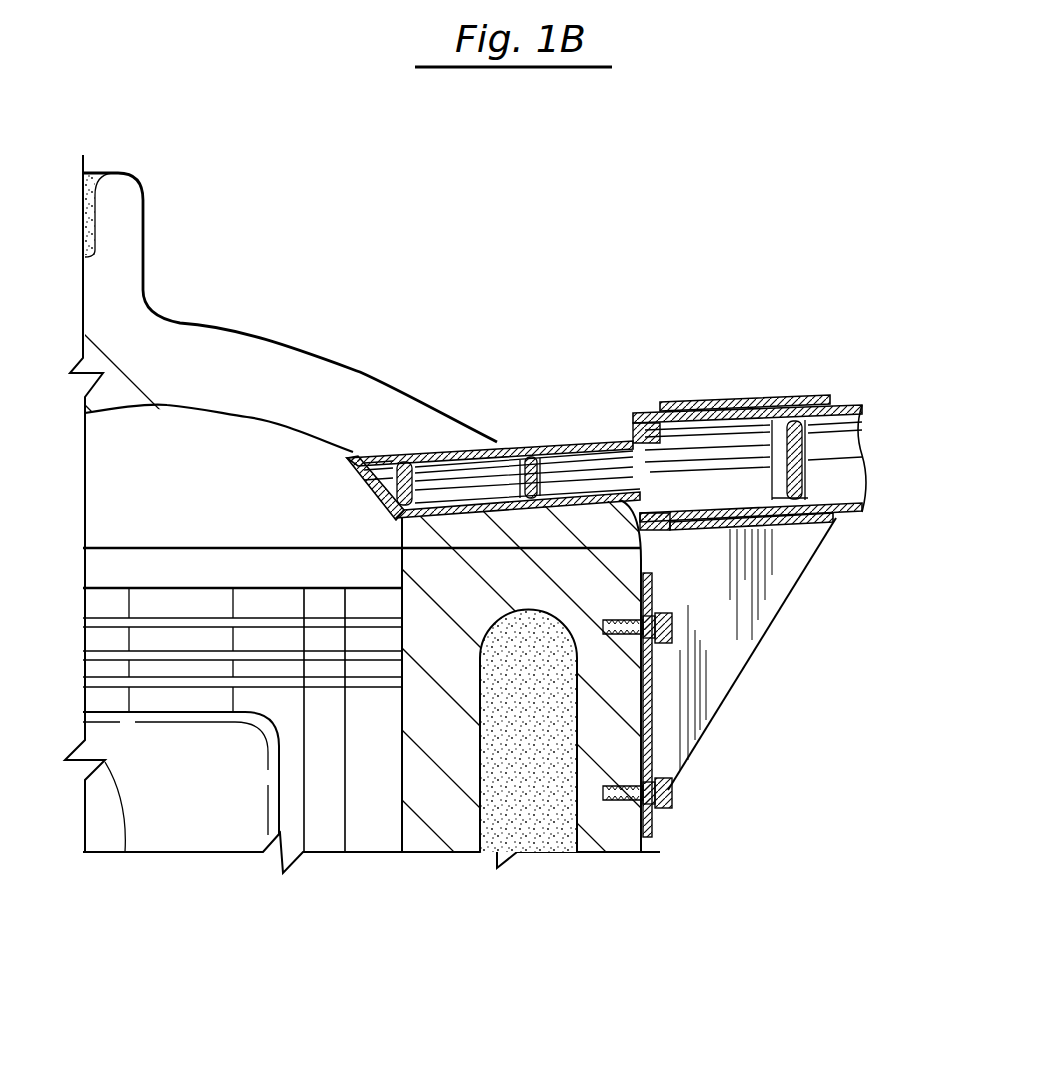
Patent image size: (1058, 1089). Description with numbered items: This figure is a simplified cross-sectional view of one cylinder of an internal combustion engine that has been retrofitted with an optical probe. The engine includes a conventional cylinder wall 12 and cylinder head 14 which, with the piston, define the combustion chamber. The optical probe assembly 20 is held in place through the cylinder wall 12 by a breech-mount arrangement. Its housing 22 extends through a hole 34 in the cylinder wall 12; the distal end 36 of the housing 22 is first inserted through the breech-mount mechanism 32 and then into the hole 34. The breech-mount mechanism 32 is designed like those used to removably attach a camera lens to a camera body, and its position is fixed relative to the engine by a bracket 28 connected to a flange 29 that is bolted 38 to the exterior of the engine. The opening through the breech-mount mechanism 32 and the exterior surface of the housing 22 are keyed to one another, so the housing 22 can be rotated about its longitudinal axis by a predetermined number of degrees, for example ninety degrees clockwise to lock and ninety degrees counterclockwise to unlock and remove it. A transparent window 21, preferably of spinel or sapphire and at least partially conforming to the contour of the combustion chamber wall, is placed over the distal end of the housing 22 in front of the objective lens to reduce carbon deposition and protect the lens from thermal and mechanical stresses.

The cylinder wall 12 is at (605, 832).
The cylinder head 14 is at (275, 430).
The optical probe assembly 20 is at (665, 260).
The transparent window 21 is at (360, 485).
The optical probe housing 22 is at (849, 396).
The bracket 28 is at (758, 617).
The flange 29 is at (655, 584).
The breech-mount mechanism 32 is at (757, 395).
The hole 34 is at (441, 452).
The distal end 36 is at (563, 441).
The bolts 38 is at (673, 798).